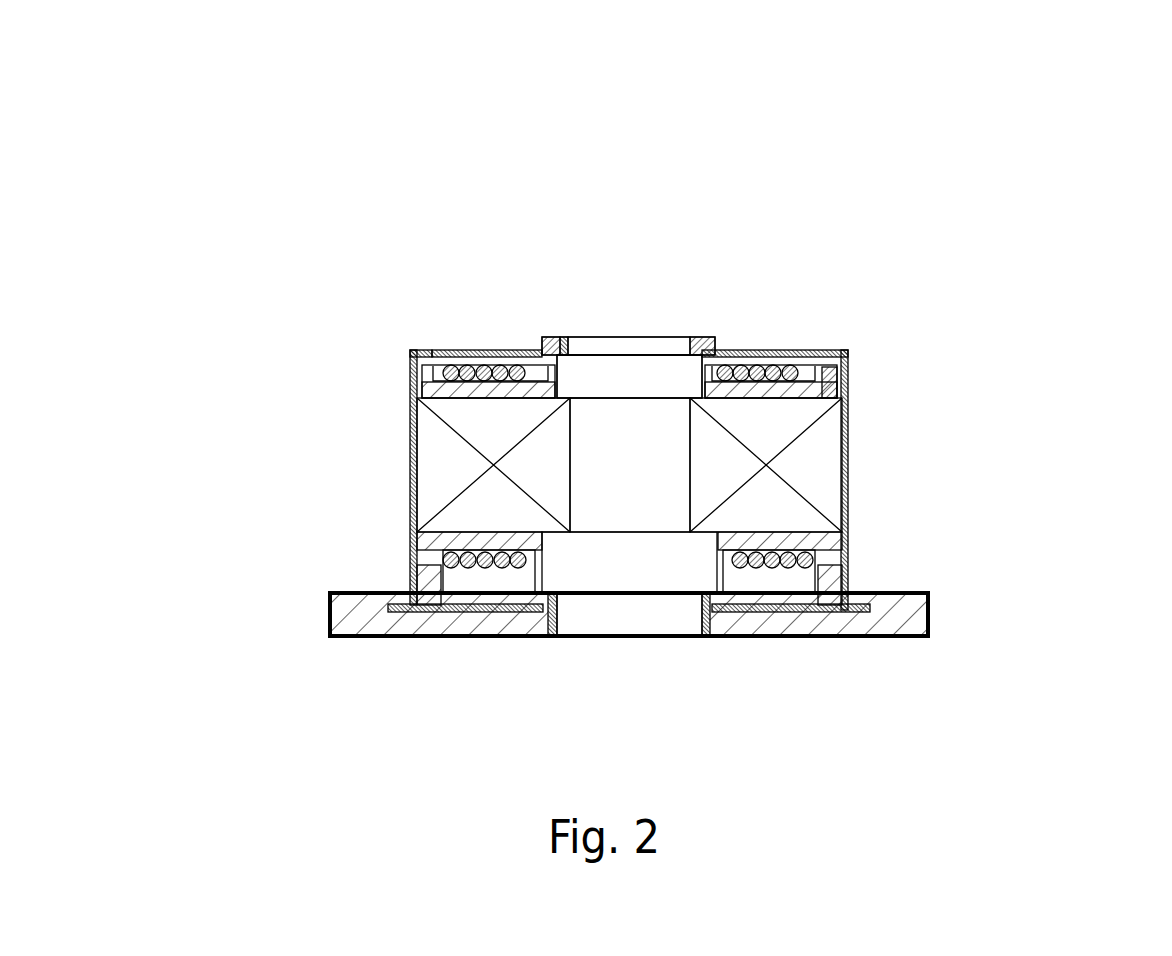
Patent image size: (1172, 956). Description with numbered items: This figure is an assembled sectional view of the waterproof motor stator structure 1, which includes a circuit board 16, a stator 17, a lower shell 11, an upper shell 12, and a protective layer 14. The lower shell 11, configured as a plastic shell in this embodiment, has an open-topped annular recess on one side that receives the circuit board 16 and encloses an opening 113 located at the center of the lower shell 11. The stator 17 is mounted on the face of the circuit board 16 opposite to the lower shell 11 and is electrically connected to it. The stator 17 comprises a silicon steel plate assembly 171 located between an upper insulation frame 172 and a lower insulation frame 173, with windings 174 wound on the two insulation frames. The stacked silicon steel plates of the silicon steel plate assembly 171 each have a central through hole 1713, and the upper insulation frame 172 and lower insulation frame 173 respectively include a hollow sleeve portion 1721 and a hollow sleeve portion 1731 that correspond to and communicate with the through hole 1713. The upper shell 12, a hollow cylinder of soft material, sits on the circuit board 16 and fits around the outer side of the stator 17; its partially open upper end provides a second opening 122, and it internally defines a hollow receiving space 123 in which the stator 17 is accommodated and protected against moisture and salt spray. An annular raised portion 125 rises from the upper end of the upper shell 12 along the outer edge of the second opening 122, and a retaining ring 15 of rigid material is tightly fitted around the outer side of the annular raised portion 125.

The waterproof motor stator structure 1 is at (967, 217).
The lower shell 11 is at (928, 610).
The opening 113 is at (573, 628).
The upper shell 12 is at (845, 407).
The second opening 122 is at (662, 353).
The receiving space 123 is at (413, 359).
The annular raised portion 125 is at (565, 353).
The protective layer 14 is at (892, 598).
The retaining ring 15 is at (547, 357).
The circuit board 16 is at (395, 607).
The stator 17 is at (188, 588).
The silicon steel plate assembly 171 is at (822, 450).
The through hole 1713 is at (657, 477).
The upper insulation frame 172 is at (830, 370).
The hollow sleeve portion 1721 is at (602, 358).
The lower insulation frame 173 is at (445, 530).
The hollow sleeve portion 1731 is at (615, 563).
The windings 174 is at (467, 363).